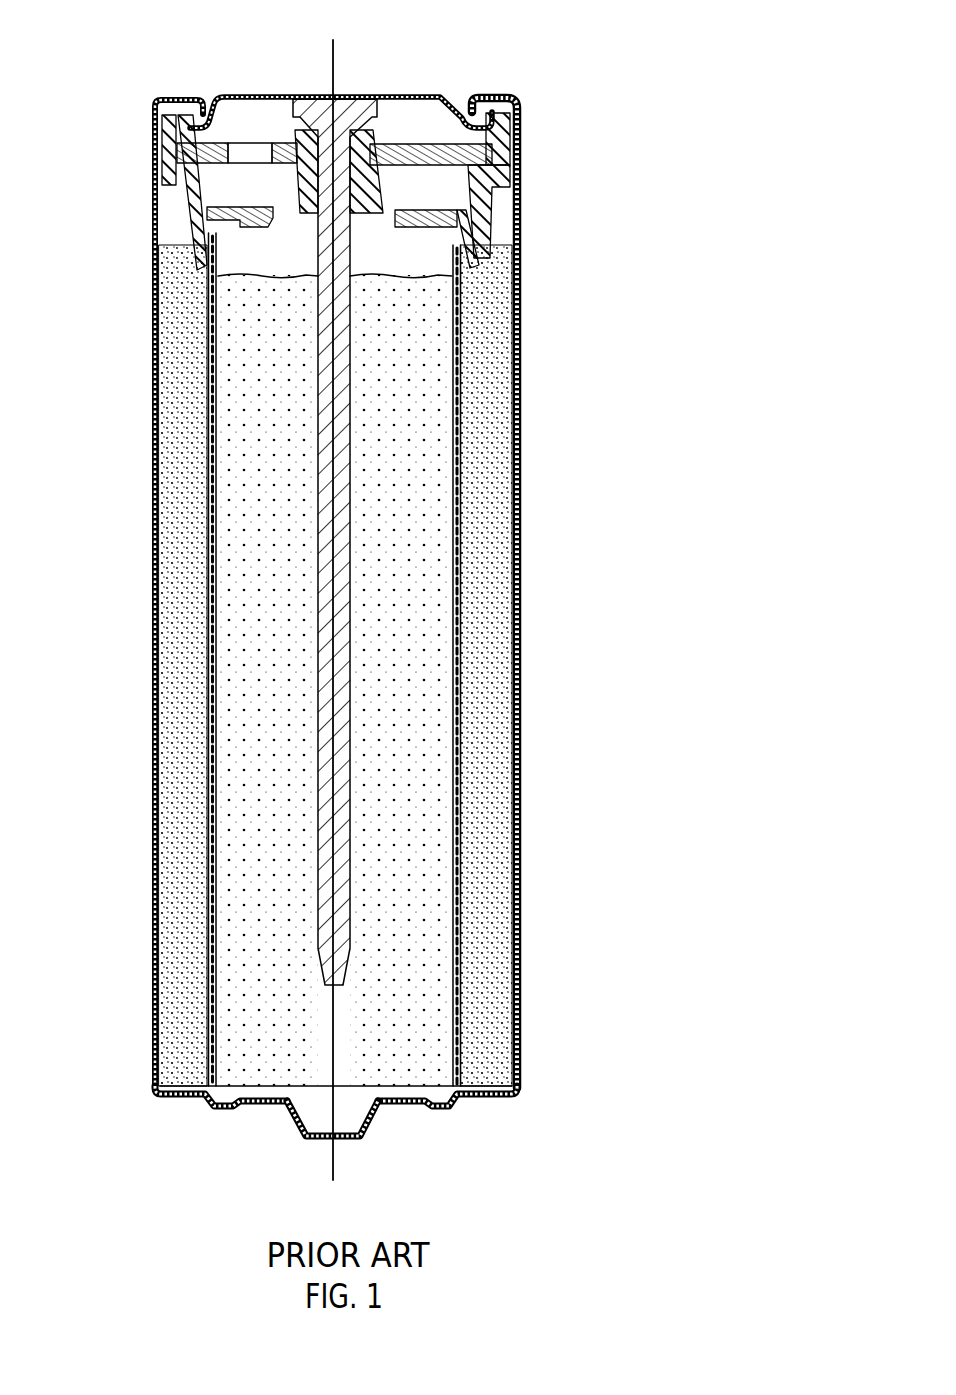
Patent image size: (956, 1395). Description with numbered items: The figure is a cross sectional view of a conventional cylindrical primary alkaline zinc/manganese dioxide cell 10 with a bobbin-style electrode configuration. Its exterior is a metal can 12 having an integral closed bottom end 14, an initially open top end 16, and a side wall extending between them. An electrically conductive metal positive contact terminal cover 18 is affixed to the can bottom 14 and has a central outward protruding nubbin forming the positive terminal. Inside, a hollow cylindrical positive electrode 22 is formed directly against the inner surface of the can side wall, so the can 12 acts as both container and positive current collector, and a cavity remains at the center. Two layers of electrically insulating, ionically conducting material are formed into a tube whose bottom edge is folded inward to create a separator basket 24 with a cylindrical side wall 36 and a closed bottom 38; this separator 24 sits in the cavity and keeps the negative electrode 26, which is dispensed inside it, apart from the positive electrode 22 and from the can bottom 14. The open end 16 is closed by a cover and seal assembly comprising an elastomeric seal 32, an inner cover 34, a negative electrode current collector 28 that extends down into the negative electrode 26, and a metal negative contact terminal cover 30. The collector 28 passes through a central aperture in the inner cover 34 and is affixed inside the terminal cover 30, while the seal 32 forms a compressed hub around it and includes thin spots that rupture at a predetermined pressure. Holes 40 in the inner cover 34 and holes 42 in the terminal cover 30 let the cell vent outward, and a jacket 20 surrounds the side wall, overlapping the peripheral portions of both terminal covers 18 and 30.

The cell 10 is at (572, 244).
The metal can 12 is at (521, 375).
The closed bottom end 14 is at (338, 1100).
The open top end 16 is at (505, 88).
The positive contact terminal cover 18 is at (305, 1140).
The jacket 20 is at (521, 318).
The positive electrode 22 is at (521, 500).
The separator basket 24 is at (473, 585).
The negative electrode 26 is at (433, 670).
The negative electrode current collector 28 is at (338, 97).
The negative contact terminal cover 30 is at (394, 96).
The elastomeric seal 32 is at (522, 173).
The inner cover 34 is at (430, 143).
The cylindrical side wall 36 is at (330, 68).
The closed bottom 38 is at (410, 1105).
The holes 40 is at (255, 150).
The holes 42 is at (170, 100).